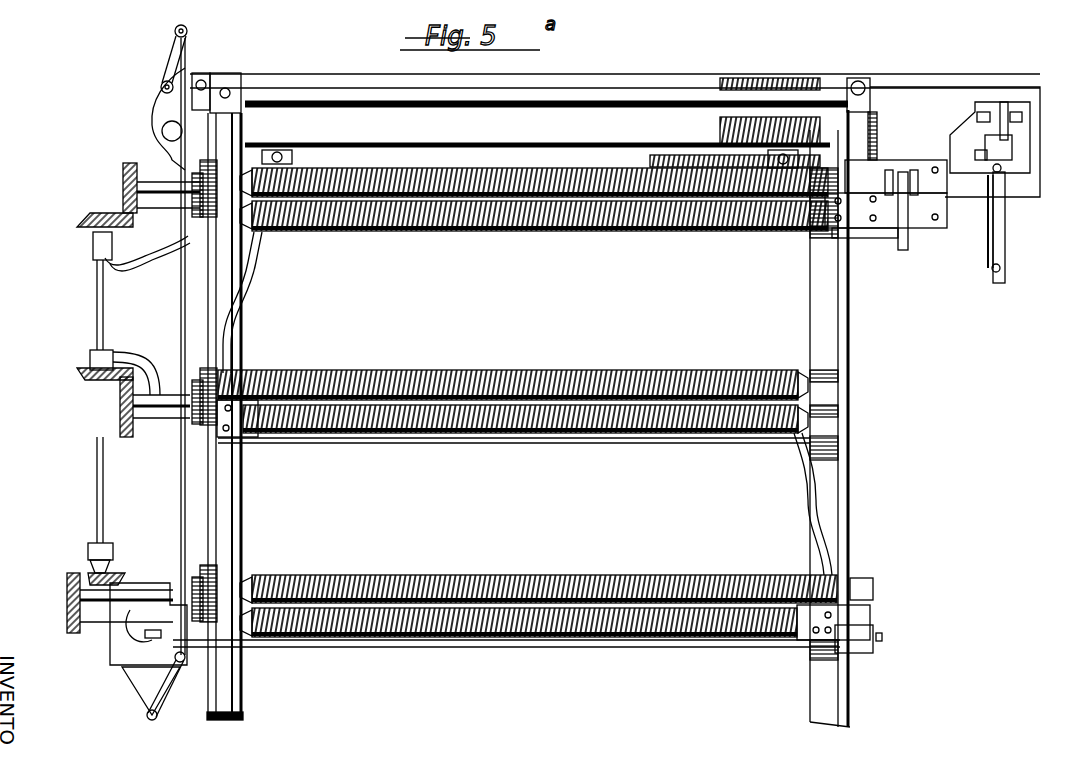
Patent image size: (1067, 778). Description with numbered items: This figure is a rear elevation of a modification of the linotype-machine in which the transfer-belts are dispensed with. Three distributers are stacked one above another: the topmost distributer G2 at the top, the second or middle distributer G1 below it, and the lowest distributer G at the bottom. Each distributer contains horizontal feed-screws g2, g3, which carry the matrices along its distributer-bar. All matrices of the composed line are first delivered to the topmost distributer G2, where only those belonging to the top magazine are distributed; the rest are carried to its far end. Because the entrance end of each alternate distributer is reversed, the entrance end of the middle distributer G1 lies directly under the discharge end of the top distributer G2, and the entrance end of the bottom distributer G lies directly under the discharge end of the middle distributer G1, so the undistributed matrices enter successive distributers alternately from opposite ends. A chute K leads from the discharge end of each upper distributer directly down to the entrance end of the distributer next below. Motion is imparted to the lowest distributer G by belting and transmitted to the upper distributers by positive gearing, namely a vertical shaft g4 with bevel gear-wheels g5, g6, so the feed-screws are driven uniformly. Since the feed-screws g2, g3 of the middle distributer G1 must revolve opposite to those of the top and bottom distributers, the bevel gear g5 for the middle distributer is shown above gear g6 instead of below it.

The feed-screw g2 is at (697, 580).
The feed-screw g3 is at (715, 665).
The vertical shaft g4 is at (97, 293).
The bevel gear-wheel g5 is at (118, 573).
The bevel gear-wheel g6 is at (50, 590).
The lowest distributer G is at (875, 607).
The second distributer G1 is at (250, 433).
The topmost distributer G2 is at (945, 240).
The chute K is at (258, 268).